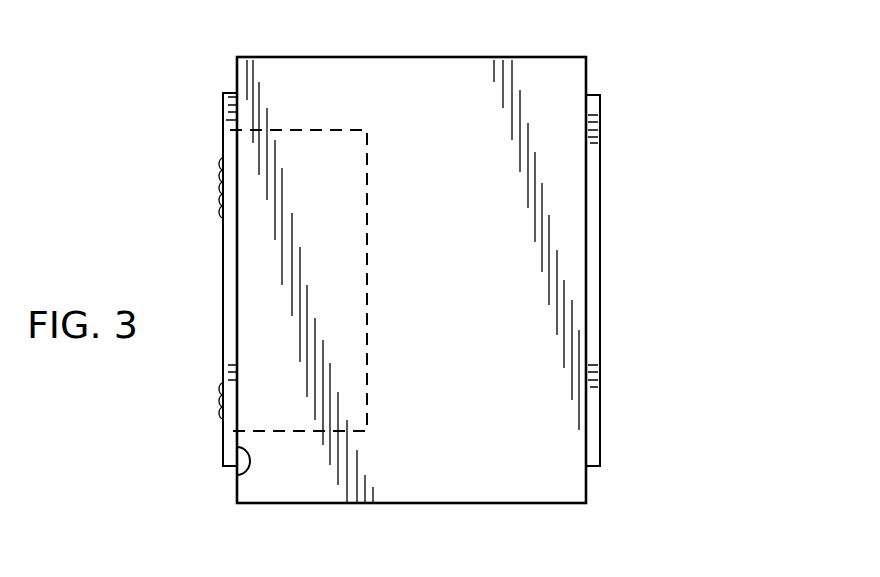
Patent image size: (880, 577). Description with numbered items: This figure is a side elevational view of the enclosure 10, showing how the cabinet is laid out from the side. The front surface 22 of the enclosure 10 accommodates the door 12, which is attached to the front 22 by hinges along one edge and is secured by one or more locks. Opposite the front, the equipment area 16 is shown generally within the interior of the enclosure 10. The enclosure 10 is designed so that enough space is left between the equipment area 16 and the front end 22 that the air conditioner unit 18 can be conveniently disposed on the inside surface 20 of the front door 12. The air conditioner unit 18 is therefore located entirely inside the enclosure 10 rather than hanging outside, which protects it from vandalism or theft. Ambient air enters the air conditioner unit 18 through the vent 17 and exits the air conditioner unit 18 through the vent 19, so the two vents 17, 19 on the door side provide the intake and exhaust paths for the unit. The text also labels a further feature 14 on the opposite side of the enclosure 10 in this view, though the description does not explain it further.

The enclosure 10 is at (612, 62).
The door 12 is at (224, 138).
The right side rail 14 is at (600, 153).
The equipment area 16 is at (543, 448).
The vent 17 is at (223, 207).
The air conditioner unit 18 is at (368, 160).
The vent 19 is at (223, 393).
The inside surface 20 is at (240, 478).
The front surface 22 is at (237, 72).